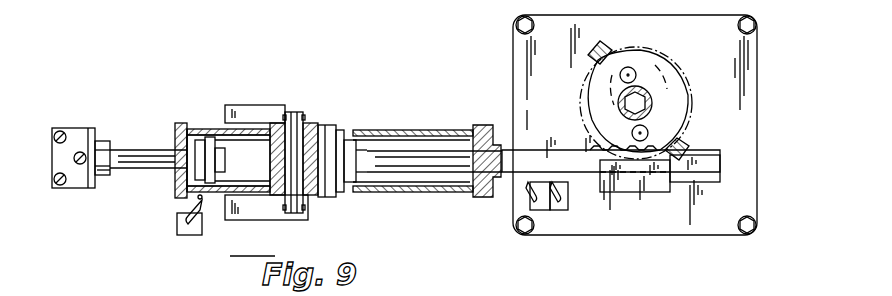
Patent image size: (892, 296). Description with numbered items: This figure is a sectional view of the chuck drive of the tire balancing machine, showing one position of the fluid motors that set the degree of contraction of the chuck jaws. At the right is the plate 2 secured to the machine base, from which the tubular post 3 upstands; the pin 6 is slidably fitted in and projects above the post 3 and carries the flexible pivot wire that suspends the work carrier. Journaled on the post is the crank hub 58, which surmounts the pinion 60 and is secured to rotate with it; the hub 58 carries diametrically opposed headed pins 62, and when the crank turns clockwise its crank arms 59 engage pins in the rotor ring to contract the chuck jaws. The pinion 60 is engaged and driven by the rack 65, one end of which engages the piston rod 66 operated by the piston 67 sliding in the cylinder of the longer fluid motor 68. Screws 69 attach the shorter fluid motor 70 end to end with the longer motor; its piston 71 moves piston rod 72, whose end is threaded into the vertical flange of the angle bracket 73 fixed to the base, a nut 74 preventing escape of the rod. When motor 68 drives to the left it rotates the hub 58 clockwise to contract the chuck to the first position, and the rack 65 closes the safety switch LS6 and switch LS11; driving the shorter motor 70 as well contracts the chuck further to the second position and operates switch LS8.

The plate 2 is at (515, 68).
The tubular post 3 is at (641, 94).
The pin 6 is at (618, 101).
The hub 58 is at (660, 65).
The crank arms 59 is at (605, 42).
The pinion 60 is at (692, 87).
The headed pins 62 is at (665, 128).
The rack 65 is at (735, 146).
The piston rod 66 is at (452, 131).
The piston 67 is at (368, 128).
The fluid motor 68 is at (400, 130).
The screws 69 is at (287, 113).
The shorter fluid motor 70 is at (250, 123).
The piston 71 is at (188, 123).
The piston rod 72 is at (135, 150).
The angle bracket 73 is at (78, 130).
The nut 74 is at (98, 176).
The switch LS8 is at (176, 222).
The switch LS11 is at (544, 210).
The switch LS6 is at (566, 210).